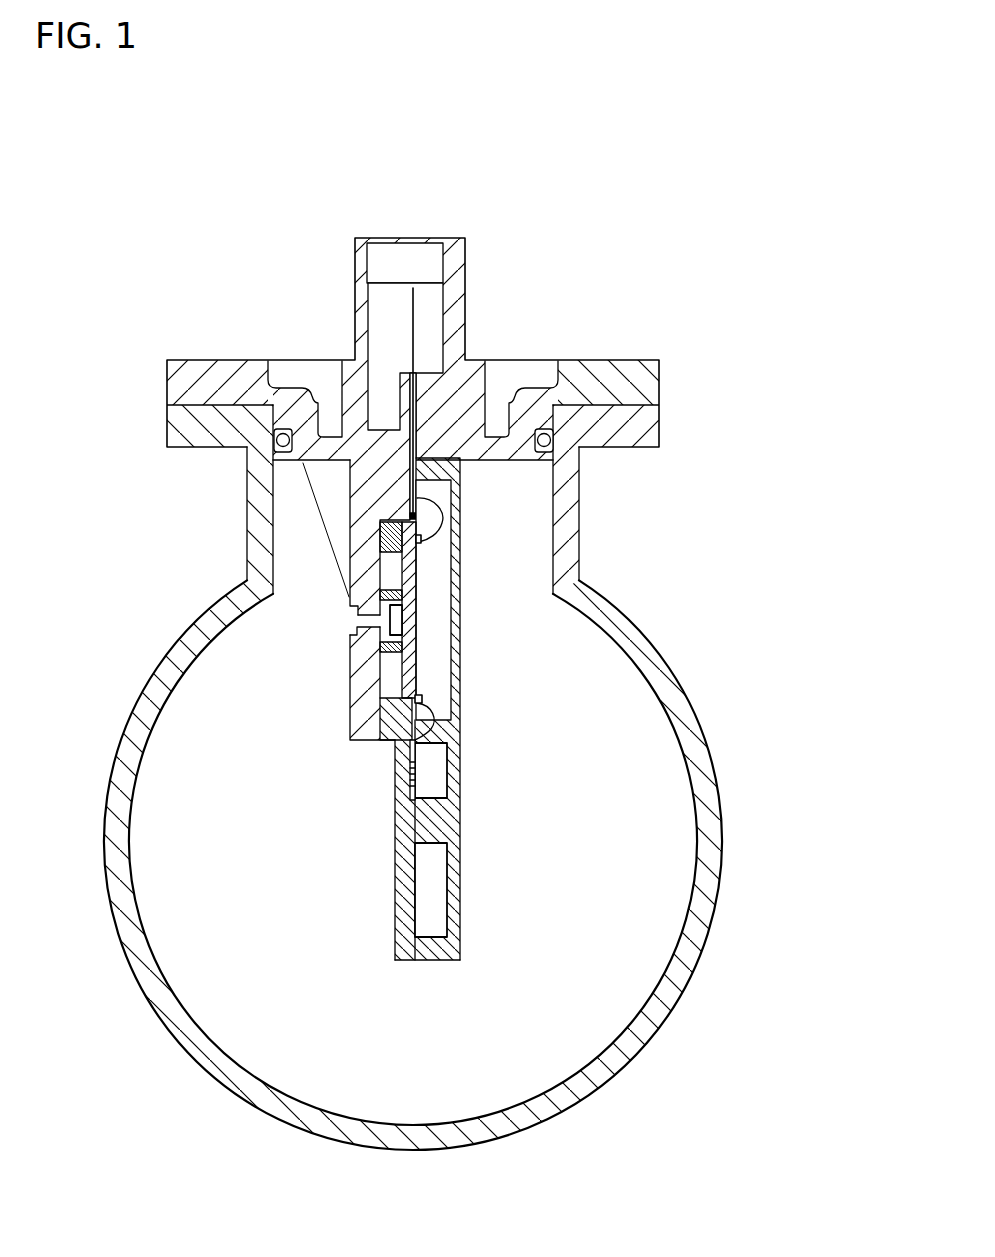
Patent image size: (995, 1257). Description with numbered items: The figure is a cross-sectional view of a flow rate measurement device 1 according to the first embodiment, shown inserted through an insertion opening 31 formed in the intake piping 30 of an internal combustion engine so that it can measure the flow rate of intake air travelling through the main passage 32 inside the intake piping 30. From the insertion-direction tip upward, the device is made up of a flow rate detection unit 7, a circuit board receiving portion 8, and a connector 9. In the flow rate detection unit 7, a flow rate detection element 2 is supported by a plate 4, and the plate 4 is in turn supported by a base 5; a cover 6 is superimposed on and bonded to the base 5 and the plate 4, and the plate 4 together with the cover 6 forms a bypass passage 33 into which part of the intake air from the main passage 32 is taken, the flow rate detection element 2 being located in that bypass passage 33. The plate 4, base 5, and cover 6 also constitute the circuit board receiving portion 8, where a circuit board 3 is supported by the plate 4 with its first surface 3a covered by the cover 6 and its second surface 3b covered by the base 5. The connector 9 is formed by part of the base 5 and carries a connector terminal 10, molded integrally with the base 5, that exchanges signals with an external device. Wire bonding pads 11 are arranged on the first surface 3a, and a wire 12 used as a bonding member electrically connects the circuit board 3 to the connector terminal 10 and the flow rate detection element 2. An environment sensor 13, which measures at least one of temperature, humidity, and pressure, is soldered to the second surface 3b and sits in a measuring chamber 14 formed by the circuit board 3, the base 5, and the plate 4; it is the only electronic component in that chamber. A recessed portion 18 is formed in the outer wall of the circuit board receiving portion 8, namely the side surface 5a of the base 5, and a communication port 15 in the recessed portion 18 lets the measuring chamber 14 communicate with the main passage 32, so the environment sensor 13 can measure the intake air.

The flow rate measurement device 1 is at (438, 237).
The flow rate detection element 2 is at (425, 762).
The circuit board 3 is at (410, 582).
The first surface 3a is at (417, 648).
The second surface 3b is at (378, 750).
The plate 4 is at (406, 960).
The base 5 is at (633, 375).
The side surface 5a is at (349, 583).
The cover 6 is at (447, 948).
The flow rate detection unit 7 is at (205, 965).
The circuit board receiving portion 8 is at (204, 742).
The connector 9 is at (206, 237).
The connector terminal 10 is at (415, 327).
The wire bonding pad 11 is at (421, 541).
The wire 12 is at (417, 500).
The environment sensor 13 is at (404, 618).
The measuring chamber 14 is at (372, 632).
The communication port 15 is at (357, 620).
The recessed portion 18 is at (350, 628).
The intake piping 30 is at (598, 1075).
The insertion opening 31 is at (560, 452).
The main passage 32 is at (657, 834).
The bypass passage 33 is at (432, 788).